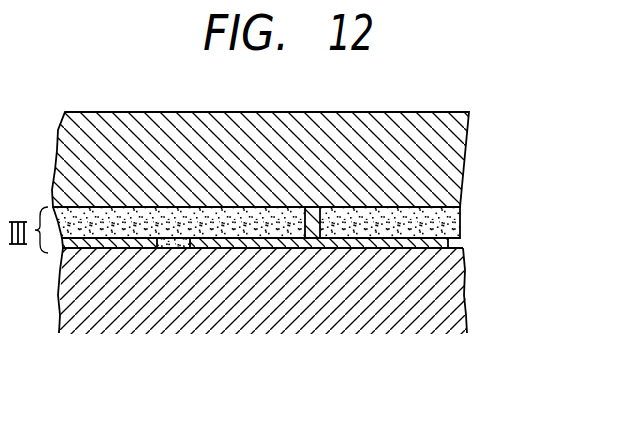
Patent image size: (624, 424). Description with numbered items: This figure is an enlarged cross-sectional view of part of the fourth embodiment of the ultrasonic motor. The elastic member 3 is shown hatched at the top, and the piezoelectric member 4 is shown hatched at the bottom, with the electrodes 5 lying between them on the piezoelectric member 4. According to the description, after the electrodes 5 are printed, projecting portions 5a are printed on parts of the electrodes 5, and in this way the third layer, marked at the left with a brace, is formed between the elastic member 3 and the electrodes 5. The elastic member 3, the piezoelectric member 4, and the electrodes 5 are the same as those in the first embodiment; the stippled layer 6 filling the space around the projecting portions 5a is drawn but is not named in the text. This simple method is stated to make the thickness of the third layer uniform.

The elastic member 3 is at (453, 166).
The piezoelectric member 4 is at (443, 287).
The electrodes 5 is at (130, 249).
The projecting portions 5a is at (311, 212).
The adhesive / bonding layer 6 is at (452, 220).